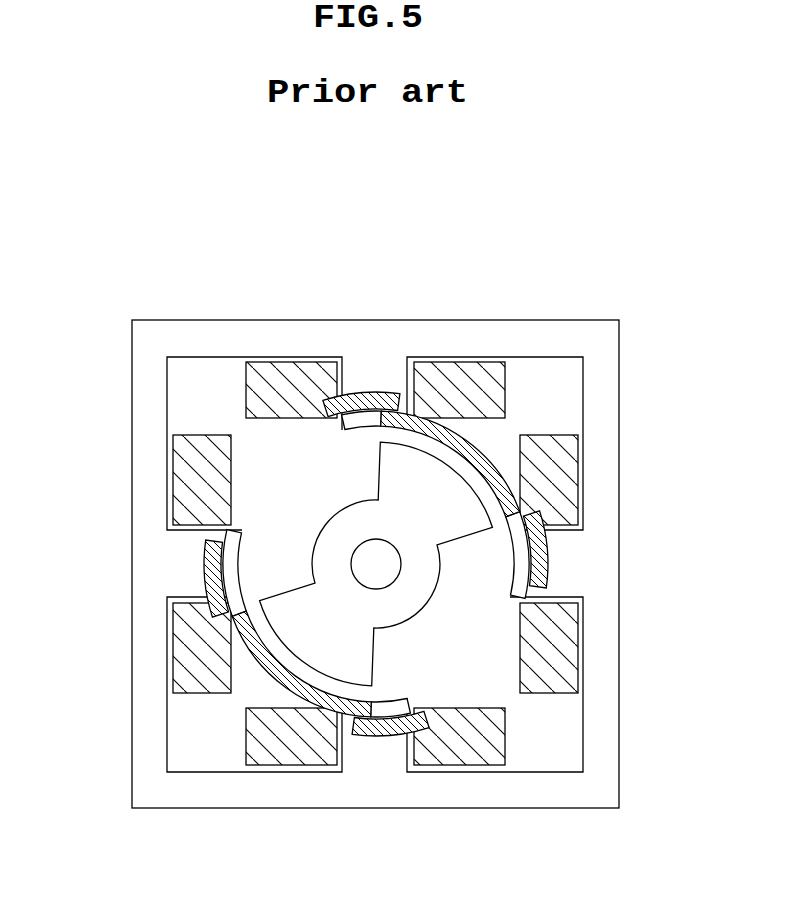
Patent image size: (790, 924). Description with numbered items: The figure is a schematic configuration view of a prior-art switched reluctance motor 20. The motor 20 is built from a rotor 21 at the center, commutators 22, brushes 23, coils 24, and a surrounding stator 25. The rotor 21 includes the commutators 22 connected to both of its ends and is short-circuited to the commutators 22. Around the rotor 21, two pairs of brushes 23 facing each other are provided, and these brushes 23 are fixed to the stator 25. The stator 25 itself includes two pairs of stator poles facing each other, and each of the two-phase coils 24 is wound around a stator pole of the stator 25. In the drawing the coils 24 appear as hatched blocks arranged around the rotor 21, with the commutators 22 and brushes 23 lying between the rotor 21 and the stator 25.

The switched reluctance motor 20 is at (233, 203).
The rotor 21 is at (340, 532).
The commutators 22 is at (273, 677).
The brushes 23 is at (202, 578).
The coils 24 is at (558, 474).
The stator 25 is at (556, 340).